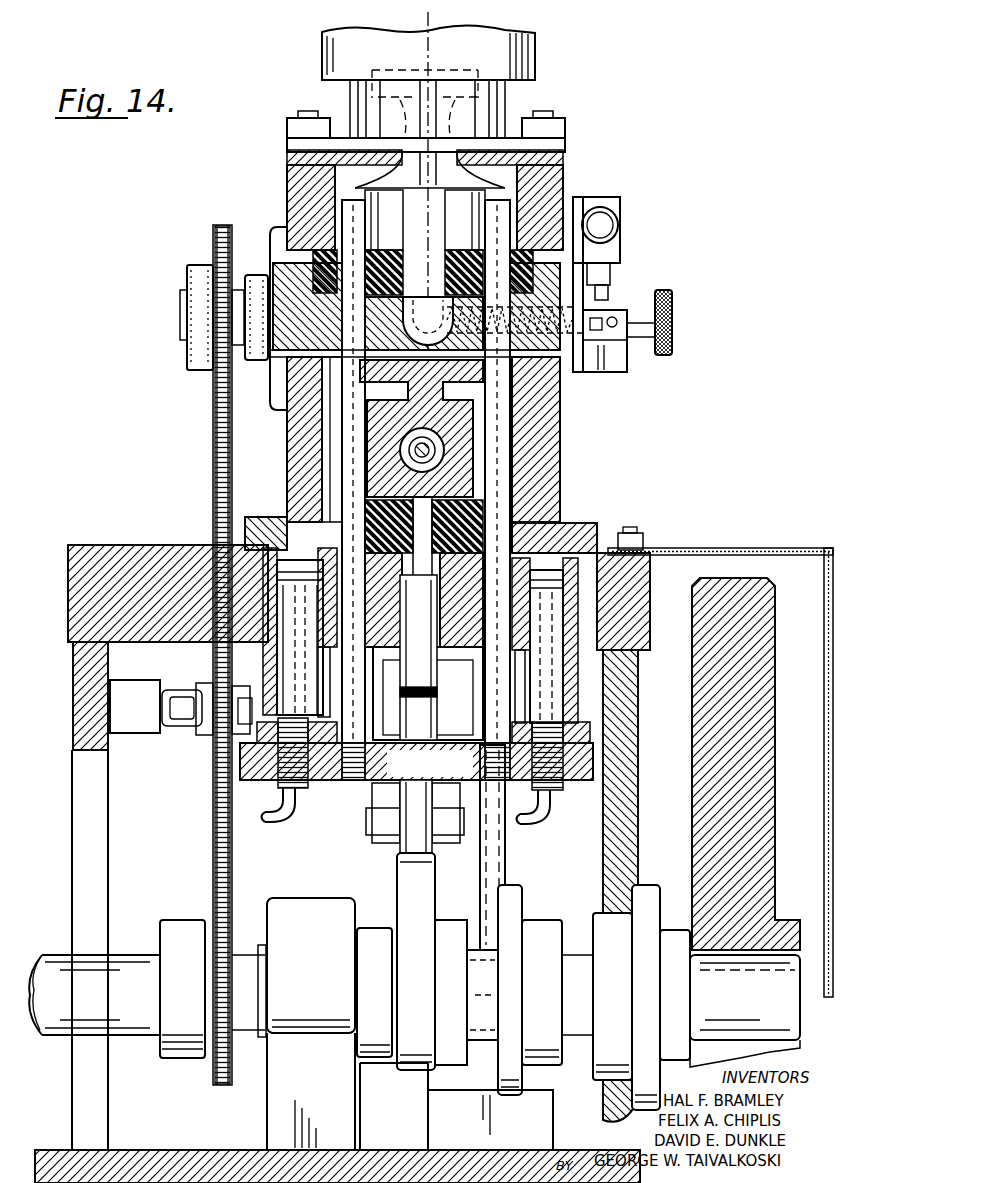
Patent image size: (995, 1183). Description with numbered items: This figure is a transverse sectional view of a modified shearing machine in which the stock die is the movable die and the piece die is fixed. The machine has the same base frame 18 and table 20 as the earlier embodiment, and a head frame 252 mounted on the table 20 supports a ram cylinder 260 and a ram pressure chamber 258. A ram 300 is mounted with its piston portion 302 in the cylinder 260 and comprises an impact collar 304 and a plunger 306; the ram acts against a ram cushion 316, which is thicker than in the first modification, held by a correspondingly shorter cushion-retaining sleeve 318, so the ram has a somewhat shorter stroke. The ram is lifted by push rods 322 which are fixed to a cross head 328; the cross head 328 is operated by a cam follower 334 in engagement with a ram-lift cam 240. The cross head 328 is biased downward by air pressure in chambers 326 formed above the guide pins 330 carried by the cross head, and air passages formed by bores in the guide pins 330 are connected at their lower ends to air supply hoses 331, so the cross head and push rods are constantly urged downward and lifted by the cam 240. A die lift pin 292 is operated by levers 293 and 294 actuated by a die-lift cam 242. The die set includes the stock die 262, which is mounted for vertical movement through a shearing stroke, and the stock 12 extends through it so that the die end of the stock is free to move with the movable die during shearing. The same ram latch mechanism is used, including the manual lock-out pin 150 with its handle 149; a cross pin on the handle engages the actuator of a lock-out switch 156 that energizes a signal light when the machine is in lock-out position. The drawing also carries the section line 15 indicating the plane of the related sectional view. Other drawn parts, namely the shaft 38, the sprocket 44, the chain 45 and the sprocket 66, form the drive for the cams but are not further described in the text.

The stock 12 is at (432, 452).
The section line 15 is at (404, 15).
The base frame 18 is at (620, 848).
The table 20 is at (128, 562).
The drive shaft 38 is at (98, 996).
The sprocket 44 is at (188, 1042).
The chain 45 is at (215, 472).
The sprocket 66 is at (186, 326).
The handle 149 is at (672, 312).
The lock-out pin 150 is at (537, 352).
The lock-out switch 156 is at (620, 225).
The ram-lift cam 240 is at (415, 1048).
The die-lift cam 242 is at (517, 915).
The head frame 252 is at (560, 431).
The ram pressure chamber 258 is at (508, 62).
The ram cylinder 260 is at (475, 113).
The stock die 262 is at (470, 432).
The die lift pin 292 is at (418, 640).
The lever 293 is at (422, 712).
The lever 294 is at (490, 870).
The ram 300 is at (420, 170).
The piston portion 302 is at (420, 75).
The impact collar 304 is at (452, 190).
The plunger 306 is at (415, 303).
The ram cushion 316 is at (395, 250).
The cushion-retaining sleeve 318 is at (525, 172).
The push rods 322 is at (495, 237).
The chambers 326 is at (287, 548).
The cross head 328 is at (360, 792).
The guide pins 330 is at (278, 688).
The air supply hoses 331 is at (282, 812).
The cam follower 334 is at (412, 832).